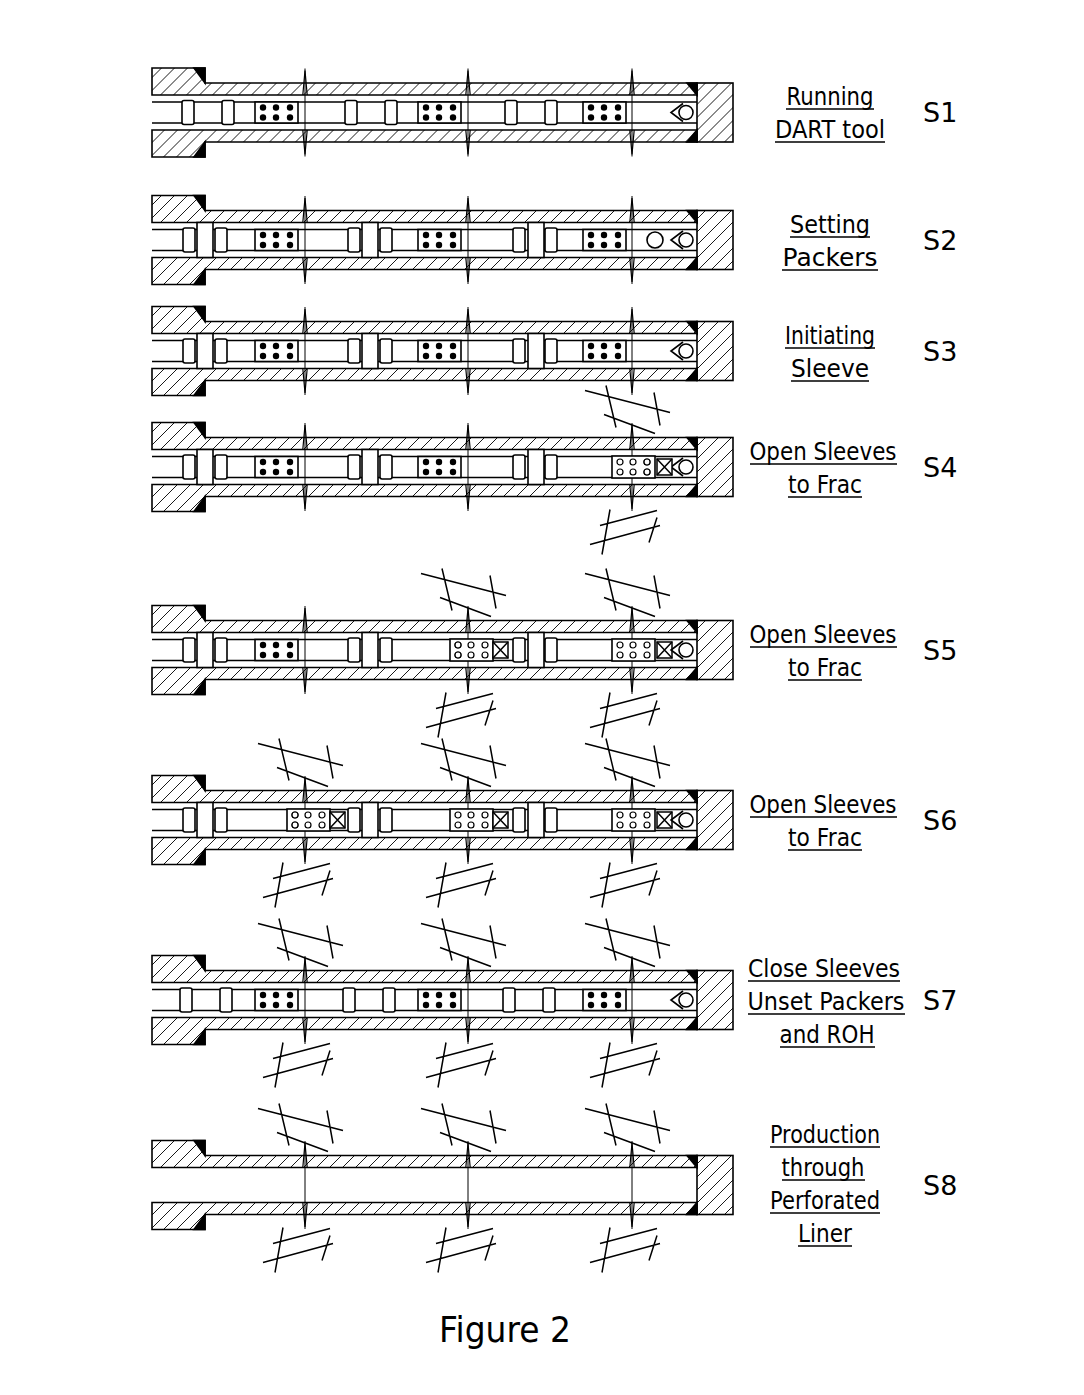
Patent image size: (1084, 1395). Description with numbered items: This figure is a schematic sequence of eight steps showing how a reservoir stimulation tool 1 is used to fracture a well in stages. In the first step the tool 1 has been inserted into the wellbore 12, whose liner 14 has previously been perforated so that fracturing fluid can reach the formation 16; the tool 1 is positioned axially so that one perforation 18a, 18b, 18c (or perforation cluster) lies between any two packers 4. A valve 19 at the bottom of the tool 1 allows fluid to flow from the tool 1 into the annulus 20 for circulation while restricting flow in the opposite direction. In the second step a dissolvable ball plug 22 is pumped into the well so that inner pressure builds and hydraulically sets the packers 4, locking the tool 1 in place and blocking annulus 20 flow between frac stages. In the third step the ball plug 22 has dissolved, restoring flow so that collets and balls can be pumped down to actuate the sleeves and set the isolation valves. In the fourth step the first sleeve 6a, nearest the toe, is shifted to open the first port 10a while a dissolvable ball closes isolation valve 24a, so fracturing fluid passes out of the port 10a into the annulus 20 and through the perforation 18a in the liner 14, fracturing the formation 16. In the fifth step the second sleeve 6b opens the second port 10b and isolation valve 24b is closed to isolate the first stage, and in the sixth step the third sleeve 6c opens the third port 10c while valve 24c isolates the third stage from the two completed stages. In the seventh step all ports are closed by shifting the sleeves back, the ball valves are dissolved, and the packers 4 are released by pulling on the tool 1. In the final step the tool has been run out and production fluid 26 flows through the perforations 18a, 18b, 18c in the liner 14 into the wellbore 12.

The reservoir stimulation tool 1 is at (128, 108).
The packers 4 is at (207, 124).
The first sleeve 6a is at (640, 457).
The second sleeve 6b is at (485, 640).
The third sleeve 6c is at (318, 809).
The first port 10a is at (646, 480).
The second port 10b is at (456, 664).
The third port 10c is at (294, 834).
The wellbore 12 is at (134, 82).
The liner 14 is at (248, 82).
The formation 16 is at (411, 66).
The perforation 18a is at (645, 92).
The perforation 18b is at (478, 92).
The perforation 18c is at (312, 94).
The valve 19 is at (693, 106).
The annulus 20 is at (657, 142).
The dissolvable ball plug 22 is at (660, 249).
The isolation valve 24a is at (667, 478).
The isolation valve 24b is at (506, 662).
The isolation valve 24c is at (340, 832).
The production fluid 26 is at (660, 1188).